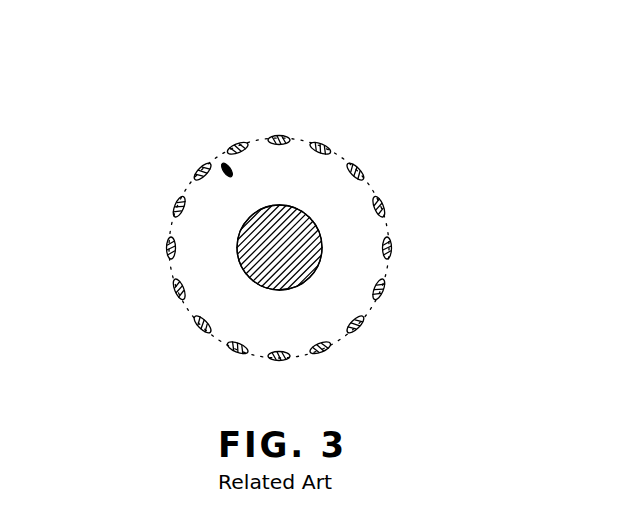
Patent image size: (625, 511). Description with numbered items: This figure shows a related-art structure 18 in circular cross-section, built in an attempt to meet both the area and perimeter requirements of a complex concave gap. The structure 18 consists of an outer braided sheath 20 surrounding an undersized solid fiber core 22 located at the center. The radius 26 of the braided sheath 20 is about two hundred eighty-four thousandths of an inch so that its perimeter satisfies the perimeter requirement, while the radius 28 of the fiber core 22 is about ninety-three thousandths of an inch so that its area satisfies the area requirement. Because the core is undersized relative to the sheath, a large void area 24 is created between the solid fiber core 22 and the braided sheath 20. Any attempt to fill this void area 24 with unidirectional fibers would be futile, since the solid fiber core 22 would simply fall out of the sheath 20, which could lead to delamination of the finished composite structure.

The structure 18 is at (367, 22).
The braided sheath 20 is at (359, 168).
The solid fiber core 22 is at (318, 233).
The void area 24 is at (307, 312).
The radius of the braided sheath 26 is at (284, 252).
The radius of the fiber core 28 is at (280, 247).